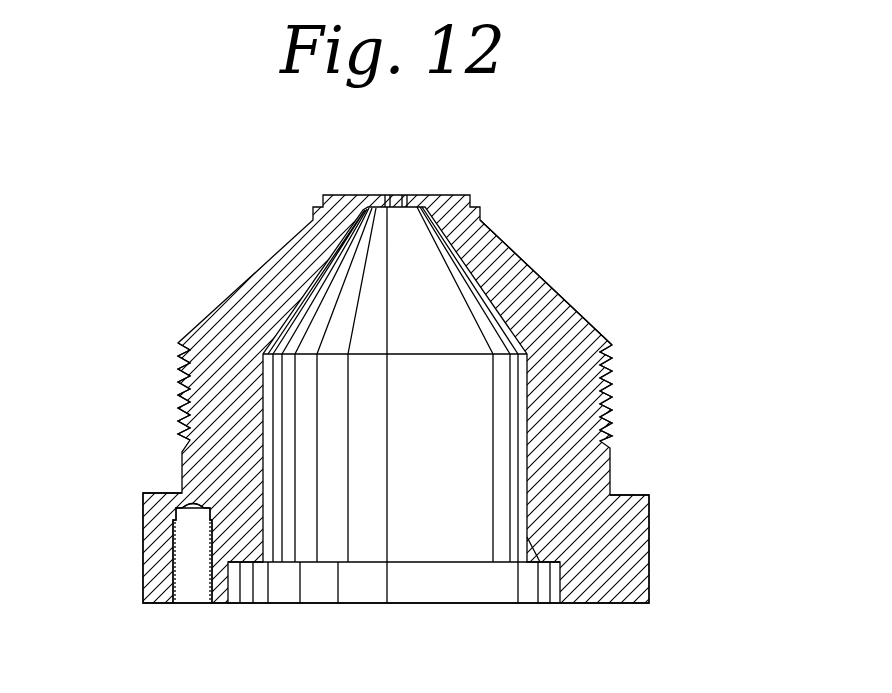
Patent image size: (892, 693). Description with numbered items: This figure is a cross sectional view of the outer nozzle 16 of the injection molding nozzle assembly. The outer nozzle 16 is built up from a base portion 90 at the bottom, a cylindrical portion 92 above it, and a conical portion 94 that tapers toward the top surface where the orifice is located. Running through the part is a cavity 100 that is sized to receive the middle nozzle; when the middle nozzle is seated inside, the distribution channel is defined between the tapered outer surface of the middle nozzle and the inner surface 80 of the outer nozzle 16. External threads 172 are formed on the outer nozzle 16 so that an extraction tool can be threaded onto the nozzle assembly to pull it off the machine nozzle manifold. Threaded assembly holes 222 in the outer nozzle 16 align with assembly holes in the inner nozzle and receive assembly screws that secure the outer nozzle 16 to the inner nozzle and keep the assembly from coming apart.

The outer nozzle 16 is at (527, 267).
The inner surface 80 is at (323, 297).
The base portion 90 is at (650, 561).
The cylindrical portion 92 is at (590, 395).
The conical portion 94 is at (580, 313).
The cavity 100 is at (470, 509).
The external threads 172 is at (187, 405).
The threaded assembly holes 222 is at (190, 578).